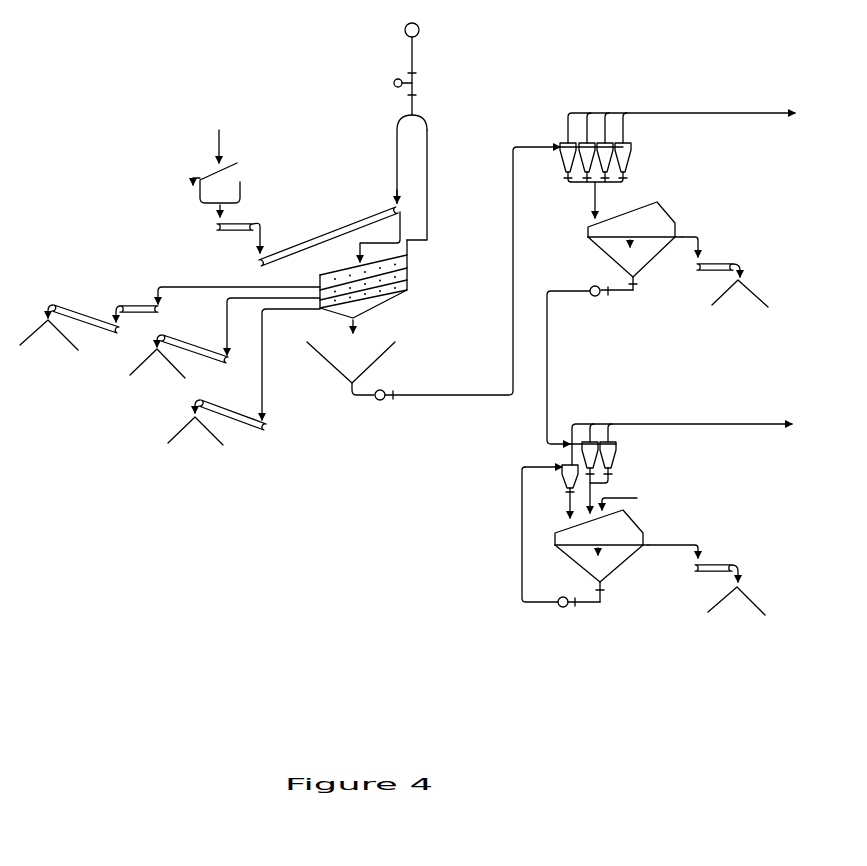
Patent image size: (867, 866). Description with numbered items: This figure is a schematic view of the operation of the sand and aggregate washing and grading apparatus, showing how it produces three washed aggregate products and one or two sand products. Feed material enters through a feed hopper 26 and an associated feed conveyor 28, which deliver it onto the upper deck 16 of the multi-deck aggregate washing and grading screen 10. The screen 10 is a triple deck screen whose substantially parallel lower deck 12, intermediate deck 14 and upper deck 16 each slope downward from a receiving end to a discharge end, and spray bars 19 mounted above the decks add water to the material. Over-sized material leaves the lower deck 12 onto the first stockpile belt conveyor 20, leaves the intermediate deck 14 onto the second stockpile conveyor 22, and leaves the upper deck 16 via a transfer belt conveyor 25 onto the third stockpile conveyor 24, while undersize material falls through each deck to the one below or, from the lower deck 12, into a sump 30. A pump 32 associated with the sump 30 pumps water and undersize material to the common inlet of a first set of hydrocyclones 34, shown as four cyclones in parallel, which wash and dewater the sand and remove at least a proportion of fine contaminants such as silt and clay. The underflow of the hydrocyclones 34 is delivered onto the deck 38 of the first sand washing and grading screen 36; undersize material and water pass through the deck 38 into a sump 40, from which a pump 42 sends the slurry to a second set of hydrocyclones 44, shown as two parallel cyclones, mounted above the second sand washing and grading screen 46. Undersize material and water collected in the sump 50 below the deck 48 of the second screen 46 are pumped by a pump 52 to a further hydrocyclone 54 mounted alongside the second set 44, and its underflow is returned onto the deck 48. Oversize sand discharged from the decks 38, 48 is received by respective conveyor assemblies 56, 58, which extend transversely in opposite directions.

The multi-deck aggregate washing and grading screen 10 is at (368, 293).
The lower deck 12 is at (382, 292).
The intermediate deck 14 is at (385, 280).
The upper deck 16 is at (327, 287).
The spray bars 19 is at (413, 243).
The first stockpile belt conveyor 20 is at (238, 422).
The second stockpile conveyor 22 is at (197, 353).
The third stockpile conveyor 24 is at (78, 310).
The transfer belt conveyor 25 is at (135, 305).
The feed hopper 26 is at (233, 195).
The feed conveyor 28 is at (310, 238).
The sump 30 is at (338, 367).
The pump 32 is at (385, 403).
The first set of hydrocyclones 34 is at (642, 152).
The first sand washing and grading screen 36 is at (663, 217).
The deck of the first sand washing and grading screen 38 is at (650, 237).
The sump 40 is at (637, 260).
The pump 42 is at (592, 298).
The second set of hydrocyclones 44 is at (618, 458).
The second sand washing and grading screen 46 is at (623, 515).
The deck of the second sand washing and grading screen 48 is at (617, 543).
The sump 50 is at (603, 568).
The pump 52 is at (558, 603).
The further hydrocyclone 54 is at (560, 480).
The conveyor assembly 56 is at (715, 263).
The conveyor assembly 58 is at (717, 563).